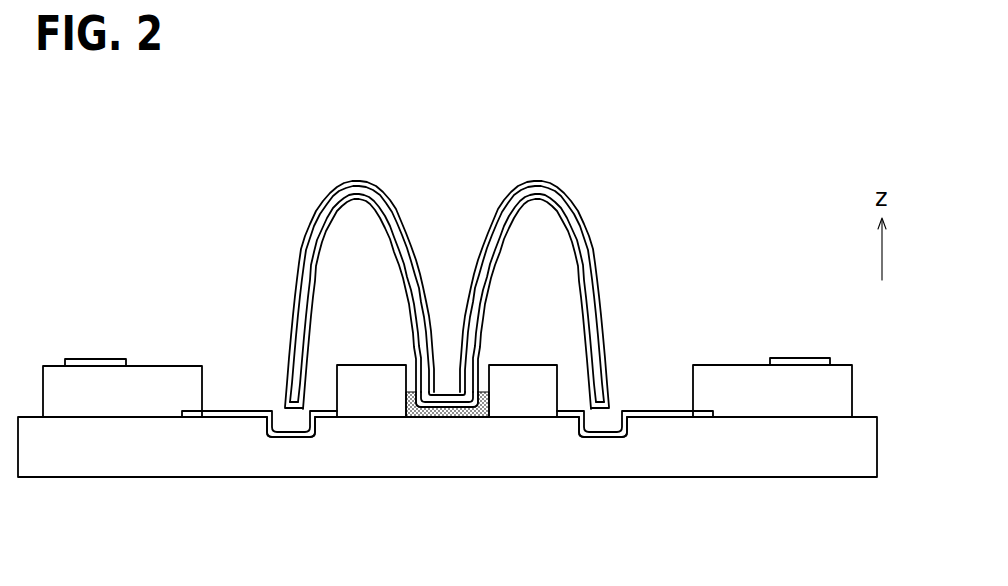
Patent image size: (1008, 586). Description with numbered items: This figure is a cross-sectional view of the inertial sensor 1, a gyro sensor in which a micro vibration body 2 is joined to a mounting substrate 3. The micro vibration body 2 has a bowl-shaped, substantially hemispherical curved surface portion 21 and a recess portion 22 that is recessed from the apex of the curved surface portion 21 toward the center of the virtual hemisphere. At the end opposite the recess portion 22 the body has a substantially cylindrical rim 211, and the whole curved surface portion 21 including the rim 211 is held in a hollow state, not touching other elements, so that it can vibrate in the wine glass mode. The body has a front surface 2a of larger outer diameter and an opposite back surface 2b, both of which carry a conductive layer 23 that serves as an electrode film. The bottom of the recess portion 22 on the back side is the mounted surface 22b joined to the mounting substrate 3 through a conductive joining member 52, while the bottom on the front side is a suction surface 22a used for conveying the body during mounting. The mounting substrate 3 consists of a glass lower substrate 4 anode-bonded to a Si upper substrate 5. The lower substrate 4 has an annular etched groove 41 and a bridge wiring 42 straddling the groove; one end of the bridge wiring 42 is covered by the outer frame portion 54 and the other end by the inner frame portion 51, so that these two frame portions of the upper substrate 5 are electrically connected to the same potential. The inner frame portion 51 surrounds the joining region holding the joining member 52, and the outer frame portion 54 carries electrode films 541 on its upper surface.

The inertial sensor 1 is at (72, 215).
The micro vibration body 2 is at (317, 206).
The front surface 2a is at (300, 269).
The back surface 2b is at (316, 270).
The curved surface portion 21 is at (589, 238).
The rim 211 is at (295, 403).
The recess portion 22 is at (485, 243).
The suction surface 22a is at (449, 392).
The mounted surface 22b is at (448, 418).
The conductive layer 23 is at (303, 243).
The mounting substrate 3 is at (40, 362).
The lower substrate 4 is at (893, 418).
The etched groove 41 is at (283, 433).
The bridge wiring 42 is at (226, 410).
The upper substrate 5 is at (893, 366).
The inner frame portion 51 is at (383, 372).
The joining member 52 is at (408, 418).
The outer frame portion 54 is at (162, 378).
The electrode films 541 is at (93, 358).